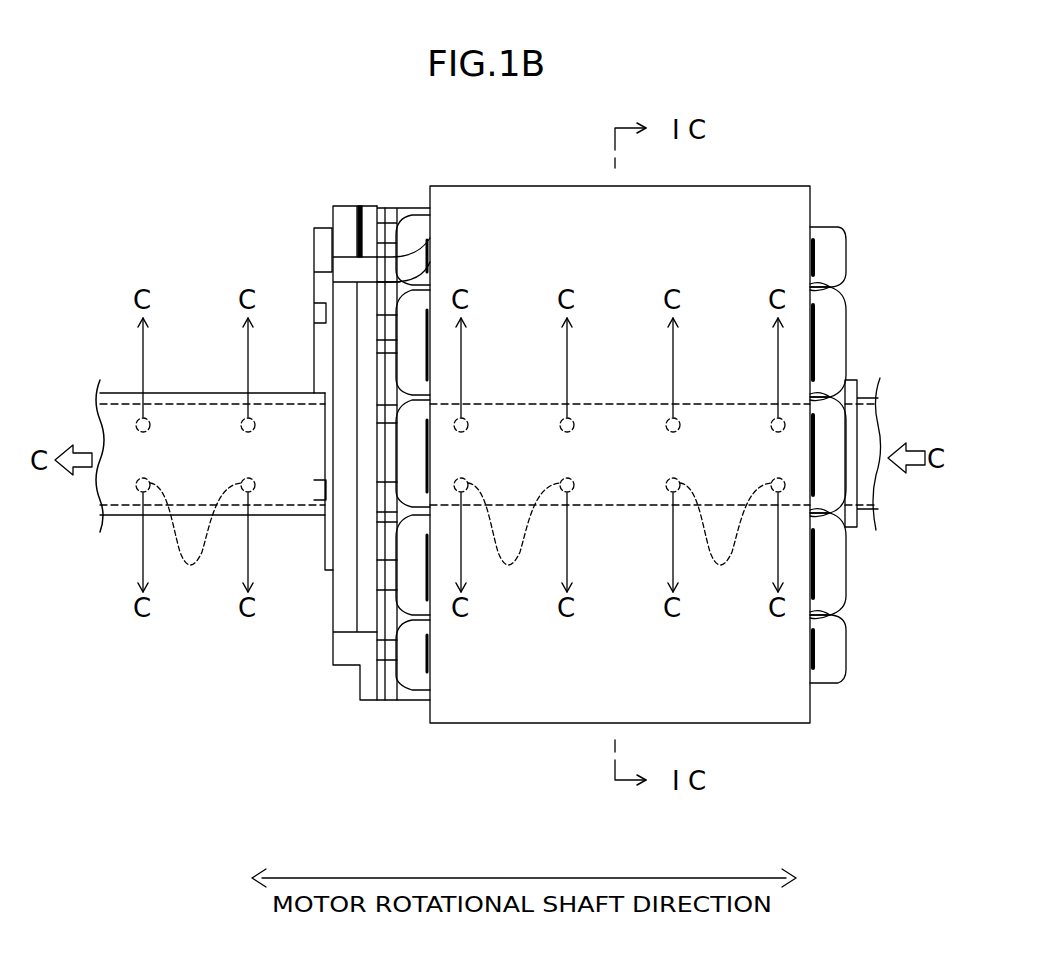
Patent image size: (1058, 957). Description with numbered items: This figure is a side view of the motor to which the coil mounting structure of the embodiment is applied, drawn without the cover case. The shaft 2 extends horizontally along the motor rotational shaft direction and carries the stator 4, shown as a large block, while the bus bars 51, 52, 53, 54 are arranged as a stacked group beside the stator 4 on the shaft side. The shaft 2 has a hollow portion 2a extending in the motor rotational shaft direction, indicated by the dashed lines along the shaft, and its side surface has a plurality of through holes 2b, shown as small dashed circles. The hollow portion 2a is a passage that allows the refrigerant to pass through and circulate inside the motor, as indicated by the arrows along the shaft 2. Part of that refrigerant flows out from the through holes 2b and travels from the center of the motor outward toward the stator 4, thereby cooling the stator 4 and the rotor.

The shaft 2 is at (116, 410).
The hollow portion 2a is at (208, 430).
The through holes 2b is at (460, 544).
The stator 4 is at (467, 200).
The bus bar 51 is at (378, 200).
The bus bar 52 is at (381, 453).
The bus bar 53 is at (403, 453).
The bus bar 54 is at (387, 454).